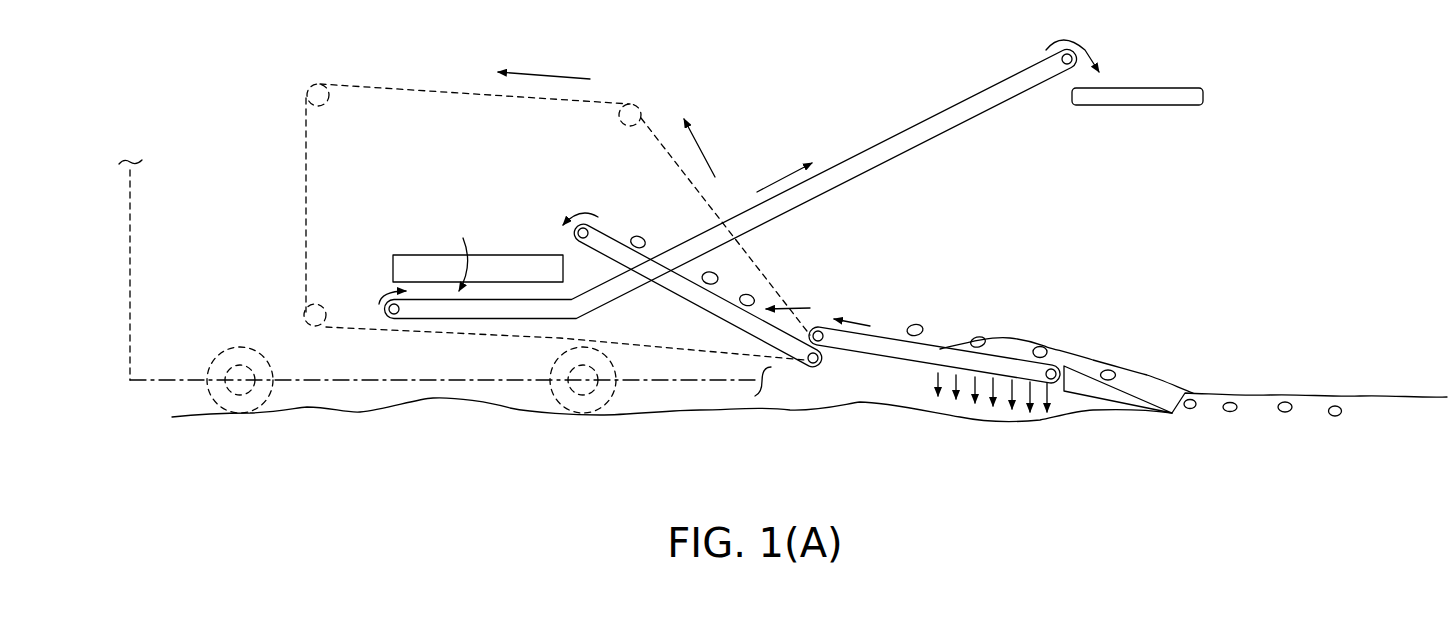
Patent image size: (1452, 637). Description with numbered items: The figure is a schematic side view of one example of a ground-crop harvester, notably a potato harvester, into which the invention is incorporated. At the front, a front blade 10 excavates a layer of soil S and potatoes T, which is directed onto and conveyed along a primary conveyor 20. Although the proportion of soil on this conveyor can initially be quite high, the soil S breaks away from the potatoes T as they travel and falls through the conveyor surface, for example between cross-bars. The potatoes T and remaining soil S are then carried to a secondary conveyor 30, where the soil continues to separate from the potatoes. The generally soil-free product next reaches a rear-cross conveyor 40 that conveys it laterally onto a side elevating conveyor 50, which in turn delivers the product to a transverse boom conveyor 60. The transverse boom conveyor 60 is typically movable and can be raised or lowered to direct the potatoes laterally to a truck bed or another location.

The front blade 10 is at (1108, 395).
The primary conveyor 20 is at (925, 360).
The secondary conveyor 30 is at (738, 328).
The rear-cross conveyor 40 is at (490, 277).
The side elevating conveyor 50 is at (832, 180).
The transverse boom conveyor 60 is at (1168, 104).
The potatoes T is at (918, 322).
The soil S is at (1012, 345).